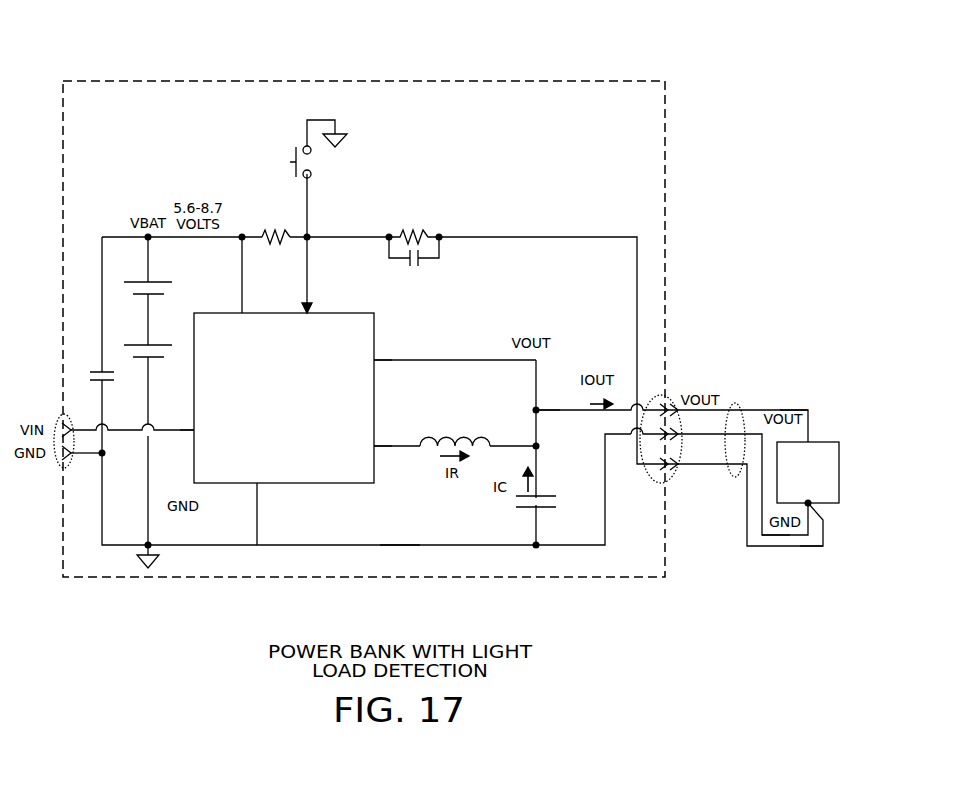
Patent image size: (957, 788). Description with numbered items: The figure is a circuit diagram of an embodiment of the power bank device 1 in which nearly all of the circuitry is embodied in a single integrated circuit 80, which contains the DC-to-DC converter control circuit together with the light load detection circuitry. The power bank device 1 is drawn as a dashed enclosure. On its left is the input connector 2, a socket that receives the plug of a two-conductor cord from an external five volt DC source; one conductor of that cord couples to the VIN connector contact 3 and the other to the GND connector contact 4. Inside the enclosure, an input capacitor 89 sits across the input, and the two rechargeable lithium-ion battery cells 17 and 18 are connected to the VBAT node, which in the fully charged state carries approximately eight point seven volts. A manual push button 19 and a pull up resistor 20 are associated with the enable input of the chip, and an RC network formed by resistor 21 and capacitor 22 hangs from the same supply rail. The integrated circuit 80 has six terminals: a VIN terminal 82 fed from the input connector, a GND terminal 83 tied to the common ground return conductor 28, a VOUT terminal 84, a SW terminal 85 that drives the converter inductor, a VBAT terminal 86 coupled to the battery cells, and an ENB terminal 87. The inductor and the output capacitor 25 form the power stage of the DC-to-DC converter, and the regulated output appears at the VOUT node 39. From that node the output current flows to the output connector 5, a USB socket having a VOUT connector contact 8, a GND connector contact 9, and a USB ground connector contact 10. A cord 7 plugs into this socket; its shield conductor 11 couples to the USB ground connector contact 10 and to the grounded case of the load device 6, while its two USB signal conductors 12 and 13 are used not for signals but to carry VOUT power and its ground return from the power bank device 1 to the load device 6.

The power bank device 1 is at (343, 80).
The input connector 2 is at (63, 470).
The VIN connector contact 3 is at (68, 425).
The GND connector contact 4 is at (70, 458).
The output connector 5 is at (668, 395).
The load device 6 is at (803, 492).
The cord 7 is at (738, 403).
The VOUT connector contact 8 is at (654, 400).
The GND connector contact 9 is at (664, 436).
The USB ground connector contact 10 is at (658, 467).
The shield conductor 11 is at (806, 548).
The conductor 12 is at (797, 410).
The conductor 13 is at (771, 537).
The battery cell 17 is at (137, 282).
The battery cell 18 is at (137, 345).
The manual push button 19 is at (289, 143).
The pull up resistor 20 is at (278, 229).
The resistor 21 is at (414, 229).
The capacitor 22 is at (414, 267).
The output capacitor 25 is at (513, 502).
The ground conductor 28 is at (399, 544).
The output node 39 is at (553, 410).
The integrated circuit 80 is at (272, 420).
The VIN terminal 82 is at (192, 429).
The GND terminal 83 is at (257, 486).
The VOUT terminal 84 is at (375, 360).
The SW terminal 85 is at (375, 446).
The VBAT terminal 86 is at (242, 313).
The ENB terminal 87 is at (309, 312).
The input capacitor 89 is at (110, 382).